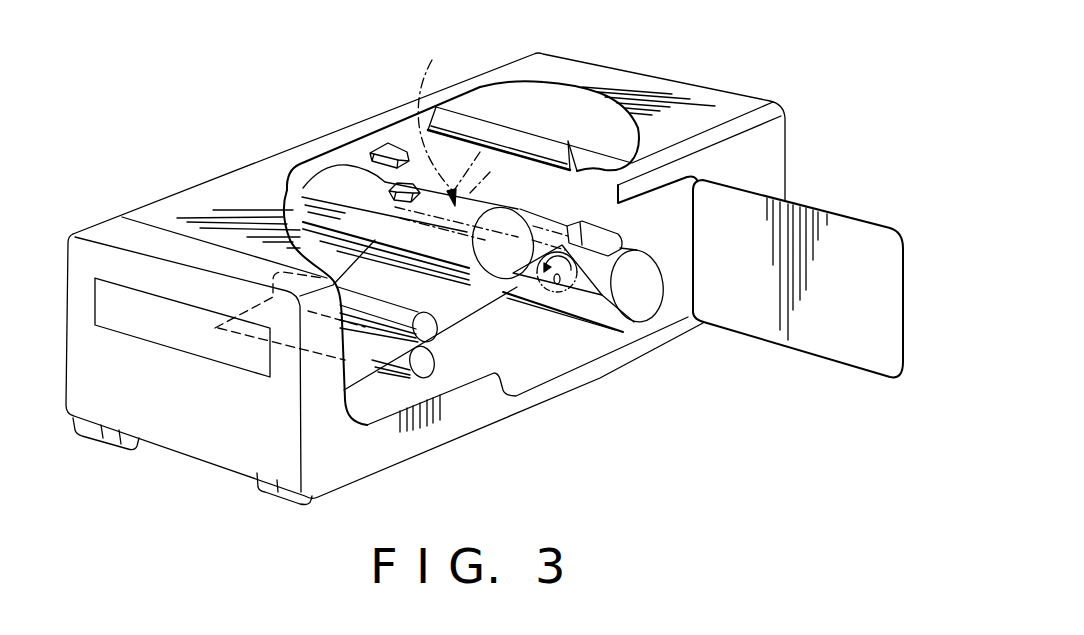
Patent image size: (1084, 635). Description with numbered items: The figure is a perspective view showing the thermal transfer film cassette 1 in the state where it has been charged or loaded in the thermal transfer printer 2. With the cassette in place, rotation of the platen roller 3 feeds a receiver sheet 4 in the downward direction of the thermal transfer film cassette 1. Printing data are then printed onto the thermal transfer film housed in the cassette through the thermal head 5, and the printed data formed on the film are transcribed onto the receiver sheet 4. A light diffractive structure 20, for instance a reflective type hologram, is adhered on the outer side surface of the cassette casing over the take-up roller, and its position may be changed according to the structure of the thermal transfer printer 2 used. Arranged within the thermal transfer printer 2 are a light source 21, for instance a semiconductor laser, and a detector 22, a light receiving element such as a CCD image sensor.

The thermal transfer film cassette 1 is at (291, 188).
The thermal transfer printer 2 is at (688, 64).
The platen roller 3 is at (559, 305).
The receiver sheet 4 is at (458, 327).
The thermal head 5 is at (462, 118).
The light diffractive structure 20 is at (391, 188).
The light source 21 is at (378, 150).
The detector 22 is at (385, 112).